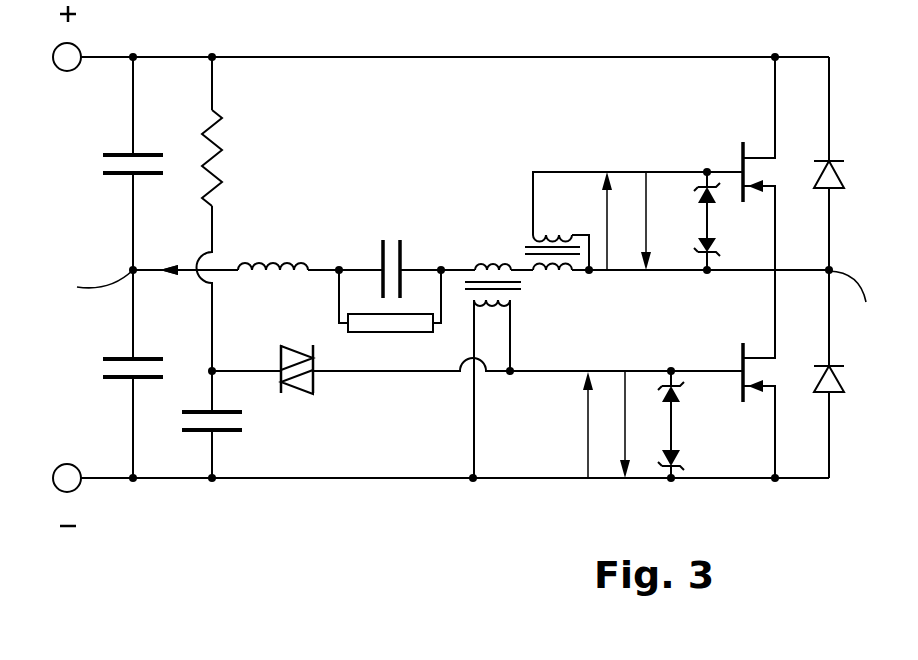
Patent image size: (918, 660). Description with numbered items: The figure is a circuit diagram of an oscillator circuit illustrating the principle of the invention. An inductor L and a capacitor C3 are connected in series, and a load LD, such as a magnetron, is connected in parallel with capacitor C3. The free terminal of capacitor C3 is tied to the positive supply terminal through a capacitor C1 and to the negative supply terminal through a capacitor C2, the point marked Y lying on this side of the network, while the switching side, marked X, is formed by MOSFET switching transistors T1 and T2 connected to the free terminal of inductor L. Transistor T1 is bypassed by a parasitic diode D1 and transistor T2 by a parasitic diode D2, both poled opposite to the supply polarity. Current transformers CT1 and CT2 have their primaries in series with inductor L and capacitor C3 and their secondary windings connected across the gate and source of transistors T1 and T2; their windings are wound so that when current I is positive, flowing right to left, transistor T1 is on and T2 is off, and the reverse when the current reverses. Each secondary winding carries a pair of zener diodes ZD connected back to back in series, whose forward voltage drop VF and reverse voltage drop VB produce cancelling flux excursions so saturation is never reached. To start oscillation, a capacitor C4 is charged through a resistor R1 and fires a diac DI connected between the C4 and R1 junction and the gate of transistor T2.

The capacitor C1 is at (105, 170).
The capacitor C2 is at (105, 373).
The capacitor C3 is at (371, 256).
The capacitor C4 is at (228, 439).
The resistor R1 is at (230, 158).
The inductor L is at (273, 249).
The load LD is at (418, 333).
The diac DI is at (297, 355).
The current transformer CT1 is at (613, 221).
The current transformer CT2 is at (512, 371).
The switching transistor T1 is at (742, 163).
The switching transistor T2 is at (742, 374).
The parasitic diode D1 is at (849, 163).
The parasitic diode D2 is at (849, 374).
The zener diodes ZD is at (706, 325).
The forward voltage drop VF is at (592, 325).
The reverse voltage drop VB is at (632, 325).
The node X is at (852, 303).
The node Y is at (91, 286).
The current I is at (167, 253).